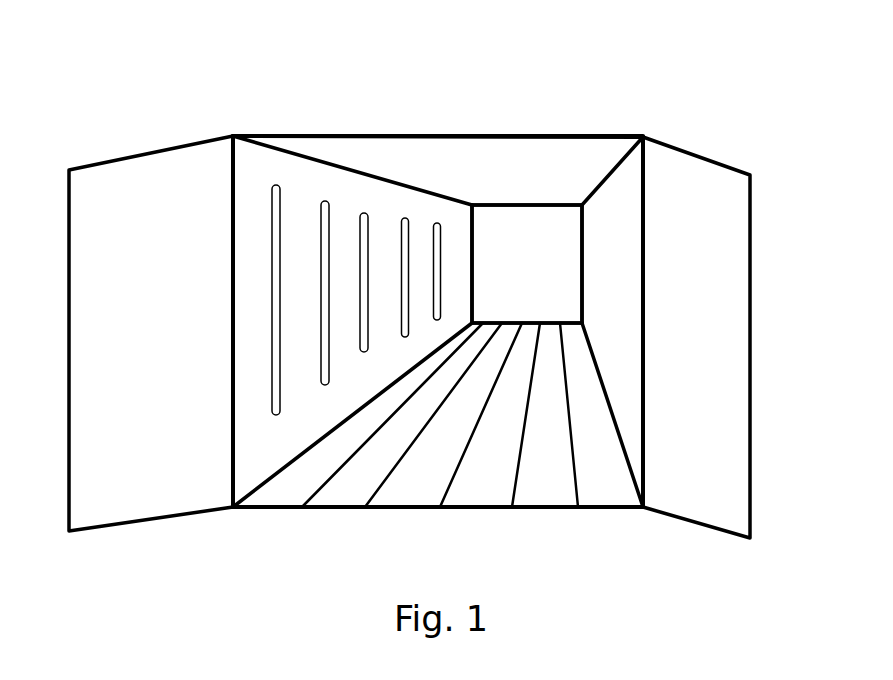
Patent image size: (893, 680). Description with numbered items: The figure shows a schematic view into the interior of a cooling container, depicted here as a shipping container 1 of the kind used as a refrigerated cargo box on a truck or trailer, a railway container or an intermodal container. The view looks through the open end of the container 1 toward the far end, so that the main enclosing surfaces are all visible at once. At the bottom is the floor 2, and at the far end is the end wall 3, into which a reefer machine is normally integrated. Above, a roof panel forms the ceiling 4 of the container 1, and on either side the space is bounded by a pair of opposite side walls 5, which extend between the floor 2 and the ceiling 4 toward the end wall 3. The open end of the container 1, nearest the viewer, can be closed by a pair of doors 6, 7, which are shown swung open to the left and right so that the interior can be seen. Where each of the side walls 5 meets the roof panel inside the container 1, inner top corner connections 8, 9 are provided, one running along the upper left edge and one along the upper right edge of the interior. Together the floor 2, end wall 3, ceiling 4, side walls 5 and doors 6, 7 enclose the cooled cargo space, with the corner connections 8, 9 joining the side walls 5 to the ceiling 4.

The shipping container 1 is at (392, 116).
The floor 2 is at (473, 482).
The end wall 3 is at (517, 276).
The ceiling 4 is at (502, 137).
The side walls 5 is at (260, 465).
The door 6 is at (180, 175).
The door 7 is at (693, 192).
The inner top corner connection 8 is at (263, 143).
The inner top corner connection 9 is at (633, 140).